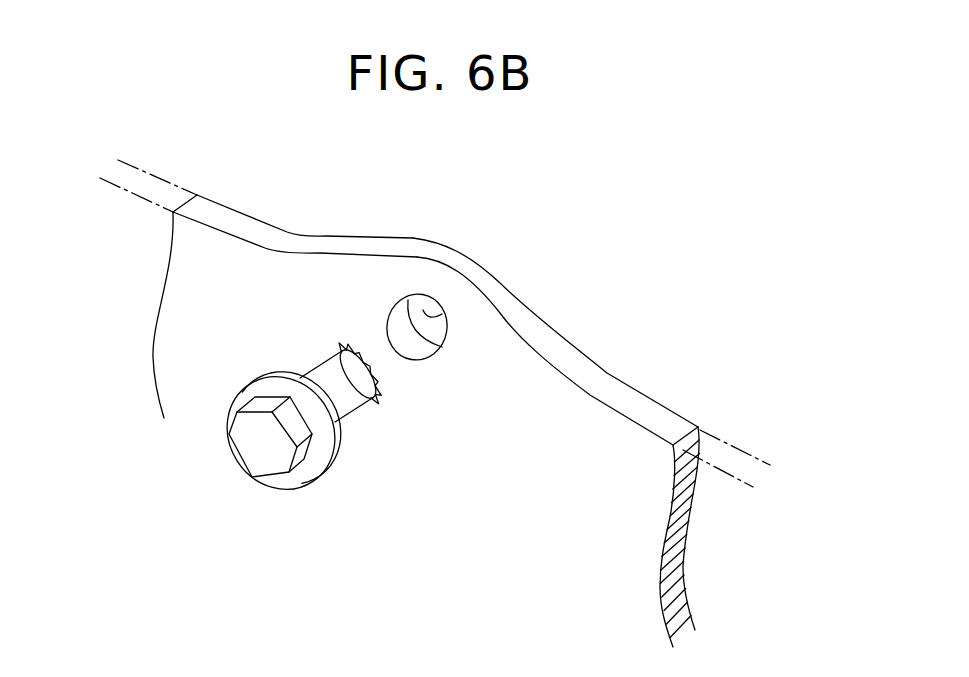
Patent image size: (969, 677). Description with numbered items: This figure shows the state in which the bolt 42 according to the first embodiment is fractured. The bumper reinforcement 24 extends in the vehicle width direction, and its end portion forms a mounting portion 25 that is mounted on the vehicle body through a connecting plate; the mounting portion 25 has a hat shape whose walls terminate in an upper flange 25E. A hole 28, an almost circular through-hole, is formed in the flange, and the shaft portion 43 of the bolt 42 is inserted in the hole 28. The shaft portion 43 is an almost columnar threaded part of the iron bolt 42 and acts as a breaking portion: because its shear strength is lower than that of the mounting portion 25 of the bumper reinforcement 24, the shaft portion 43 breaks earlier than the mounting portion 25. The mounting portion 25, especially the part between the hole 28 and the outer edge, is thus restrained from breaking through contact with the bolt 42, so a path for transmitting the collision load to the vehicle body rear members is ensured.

The bumper reinforcement 24 is at (355, 217).
The mounting portion 25 is at (570, 333).
The upper flange 25E is at (613, 392).
The hole 28 is at (423, 311).
The bolt 42 is at (325, 473).
The shaft portion 43 is at (353, 402).